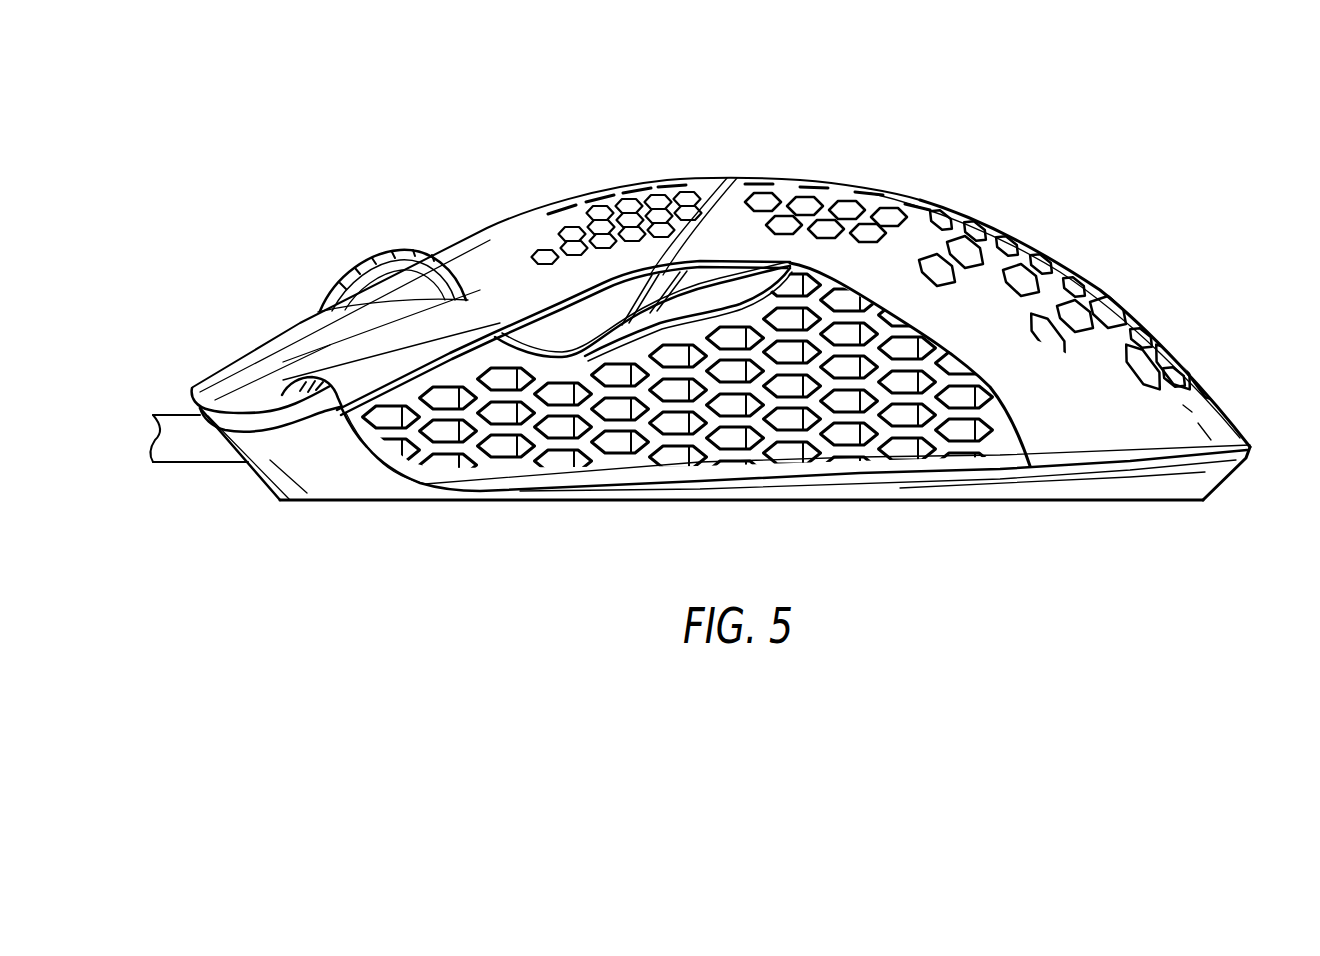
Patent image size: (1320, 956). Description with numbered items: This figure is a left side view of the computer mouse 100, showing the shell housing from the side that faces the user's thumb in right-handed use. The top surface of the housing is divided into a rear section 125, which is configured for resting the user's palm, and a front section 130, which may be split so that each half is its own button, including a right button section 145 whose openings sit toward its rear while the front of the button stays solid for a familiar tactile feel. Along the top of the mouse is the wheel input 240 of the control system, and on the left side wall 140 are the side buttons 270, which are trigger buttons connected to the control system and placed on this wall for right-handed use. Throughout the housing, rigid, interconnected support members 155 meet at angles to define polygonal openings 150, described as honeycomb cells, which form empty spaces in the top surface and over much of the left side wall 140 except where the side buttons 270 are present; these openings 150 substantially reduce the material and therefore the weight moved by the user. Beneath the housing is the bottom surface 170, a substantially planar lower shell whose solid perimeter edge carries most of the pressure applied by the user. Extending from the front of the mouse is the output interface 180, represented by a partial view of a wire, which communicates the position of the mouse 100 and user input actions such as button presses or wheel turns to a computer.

The computer mouse 100 is at (1158, 186).
The rear section 125 is at (1090, 422).
The front section 130 is at (268, 343).
The left side wall 140 is at (944, 458).
The right button section 145 is at (358, 358).
The openings 150 is at (1160, 346).
The support members 155 is at (963, 236).
The bottom surface 170 is at (626, 508).
The output interface 180 is at (196, 456).
The wheel input 240 is at (374, 262).
The side buttons 270 is at (707, 280).